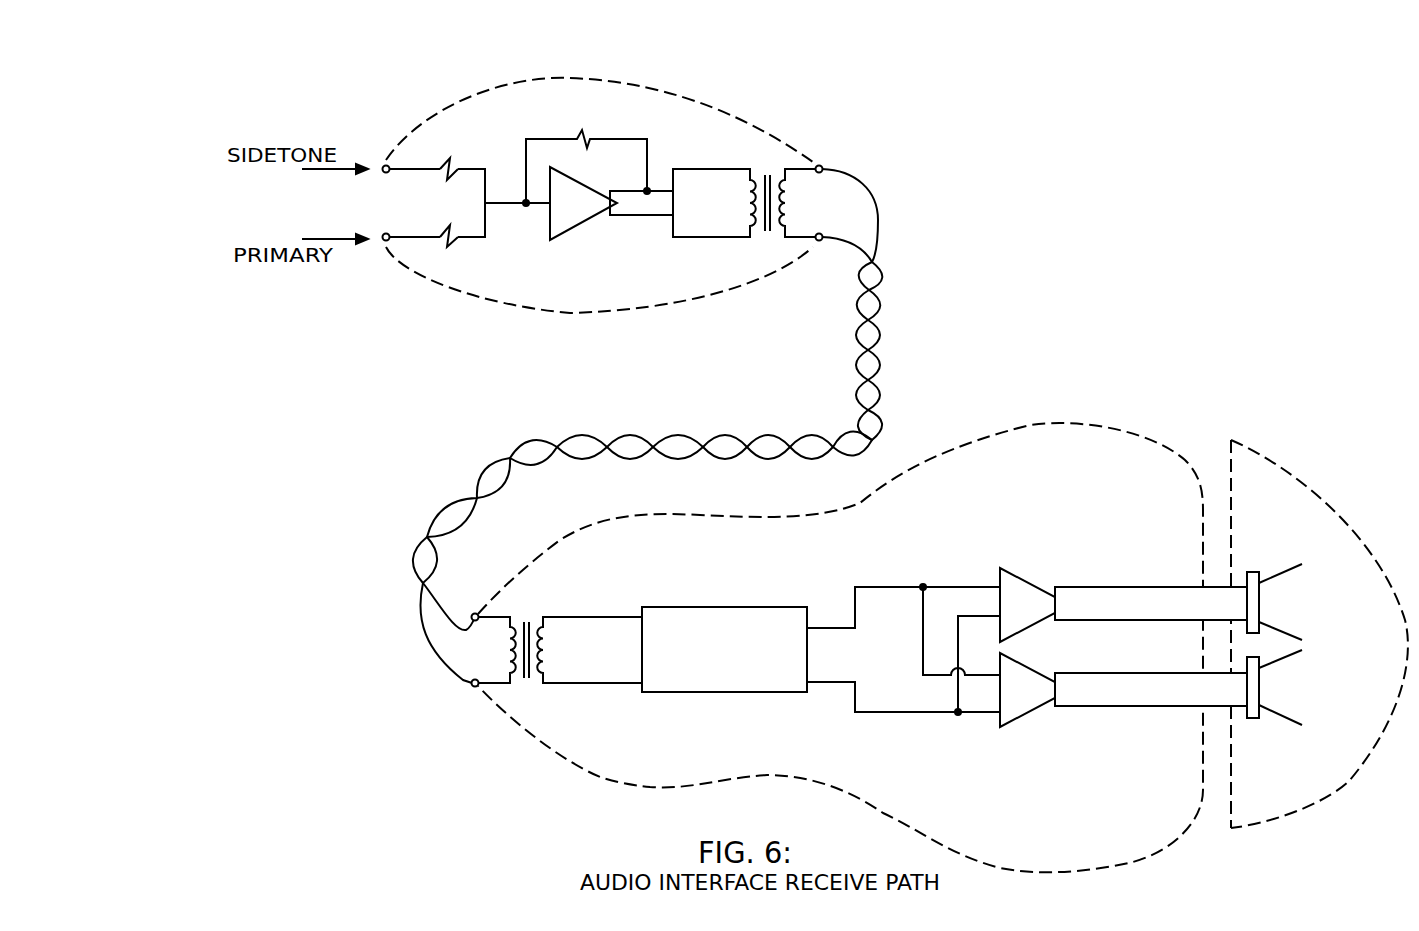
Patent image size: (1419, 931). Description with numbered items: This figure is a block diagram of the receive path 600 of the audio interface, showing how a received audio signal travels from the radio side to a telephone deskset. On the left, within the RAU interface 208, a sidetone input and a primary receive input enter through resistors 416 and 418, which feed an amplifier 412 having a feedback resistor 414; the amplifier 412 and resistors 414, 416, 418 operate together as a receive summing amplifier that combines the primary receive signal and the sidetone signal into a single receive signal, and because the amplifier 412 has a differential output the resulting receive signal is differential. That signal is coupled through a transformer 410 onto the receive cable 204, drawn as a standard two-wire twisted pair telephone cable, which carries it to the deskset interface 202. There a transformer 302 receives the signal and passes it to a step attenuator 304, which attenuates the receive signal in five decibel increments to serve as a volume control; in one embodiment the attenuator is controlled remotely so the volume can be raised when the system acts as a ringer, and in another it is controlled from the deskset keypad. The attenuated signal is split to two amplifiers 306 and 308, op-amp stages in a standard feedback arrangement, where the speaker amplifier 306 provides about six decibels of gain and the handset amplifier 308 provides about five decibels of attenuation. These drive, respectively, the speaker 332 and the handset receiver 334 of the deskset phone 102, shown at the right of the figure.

The receive path 600 is at (192, 130).
The RAU interface 208 is at (698, 103).
The resistor 416 is at (450, 158).
The resistor 418 is at (448, 247).
The resistor 414 is at (583, 128).
The amplifier 412 is at (567, 233).
The transformer 410 is at (767, 158).
The receive cable 204 is at (882, 255).
The deskset interface 202 is at (1078, 425).
The deskset phone 102 is at (1295, 482).
The transformer 302 is at (527, 607).
The step attenuator 304 is at (762, 607).
The speaker amplifier 306 is at (1013, 570).
The handset amplifier 308 is at (1010, 726).
The speaker 332 is at (1316, 612).
The handset receiver 334 is at (1316, 696).